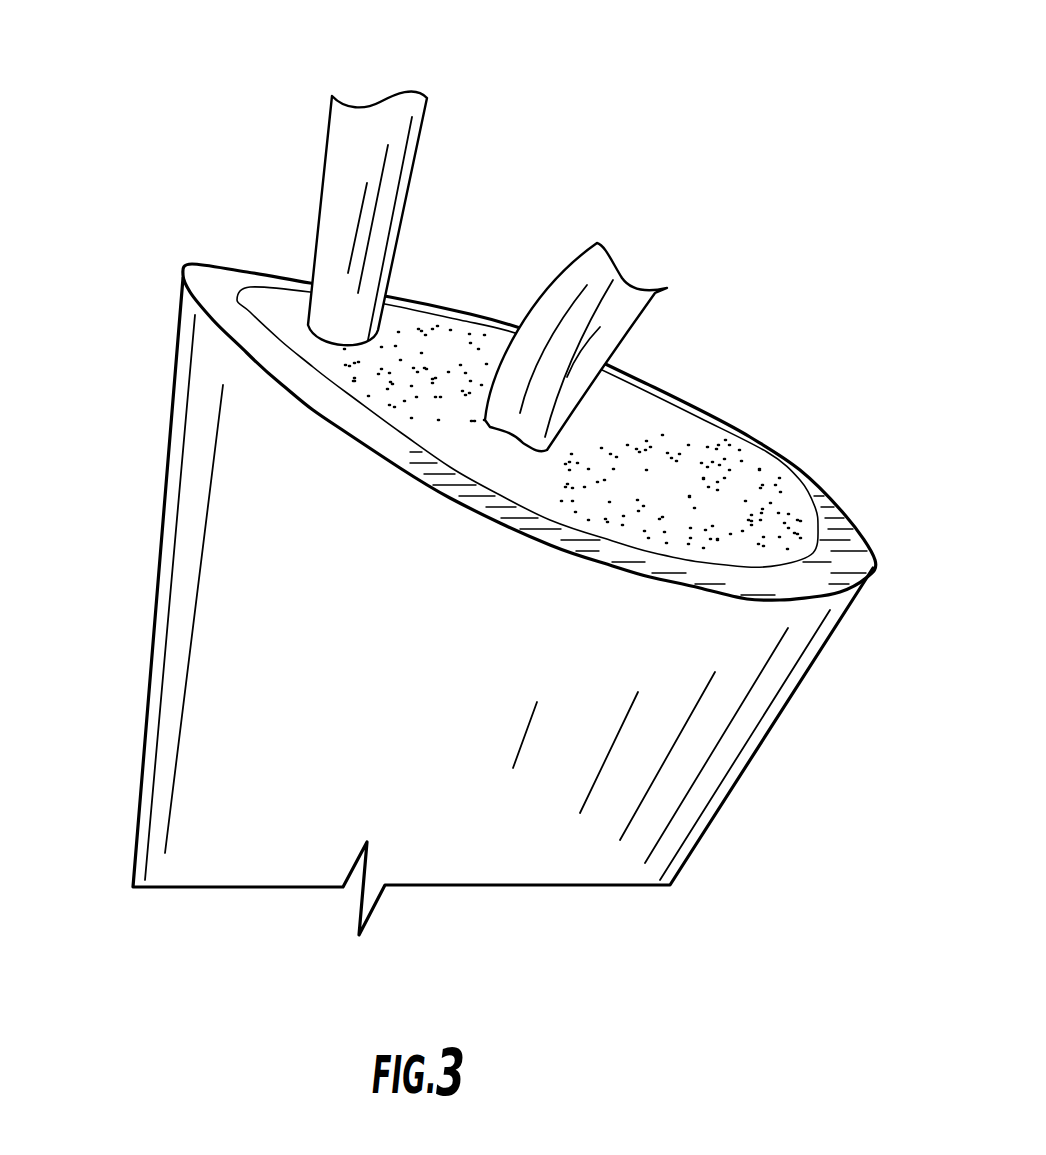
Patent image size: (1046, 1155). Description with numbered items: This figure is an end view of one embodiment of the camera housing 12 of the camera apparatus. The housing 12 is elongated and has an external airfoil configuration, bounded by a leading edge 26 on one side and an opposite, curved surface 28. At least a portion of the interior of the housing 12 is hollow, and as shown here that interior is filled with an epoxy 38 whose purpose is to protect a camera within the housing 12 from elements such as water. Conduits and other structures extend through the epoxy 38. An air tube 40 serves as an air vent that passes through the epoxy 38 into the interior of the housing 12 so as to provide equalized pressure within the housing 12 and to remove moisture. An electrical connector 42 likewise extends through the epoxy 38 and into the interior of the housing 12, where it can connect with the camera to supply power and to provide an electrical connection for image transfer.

The housing 12 is at (379, 661).
The leading edge 26 is at (170, 402).
The curved surface 28 is at (765, 735).
The epoxy 38 is at (728, 485).
The air tube 40 is at (342, 182).
The electrical connector 42 is at (553, 297).